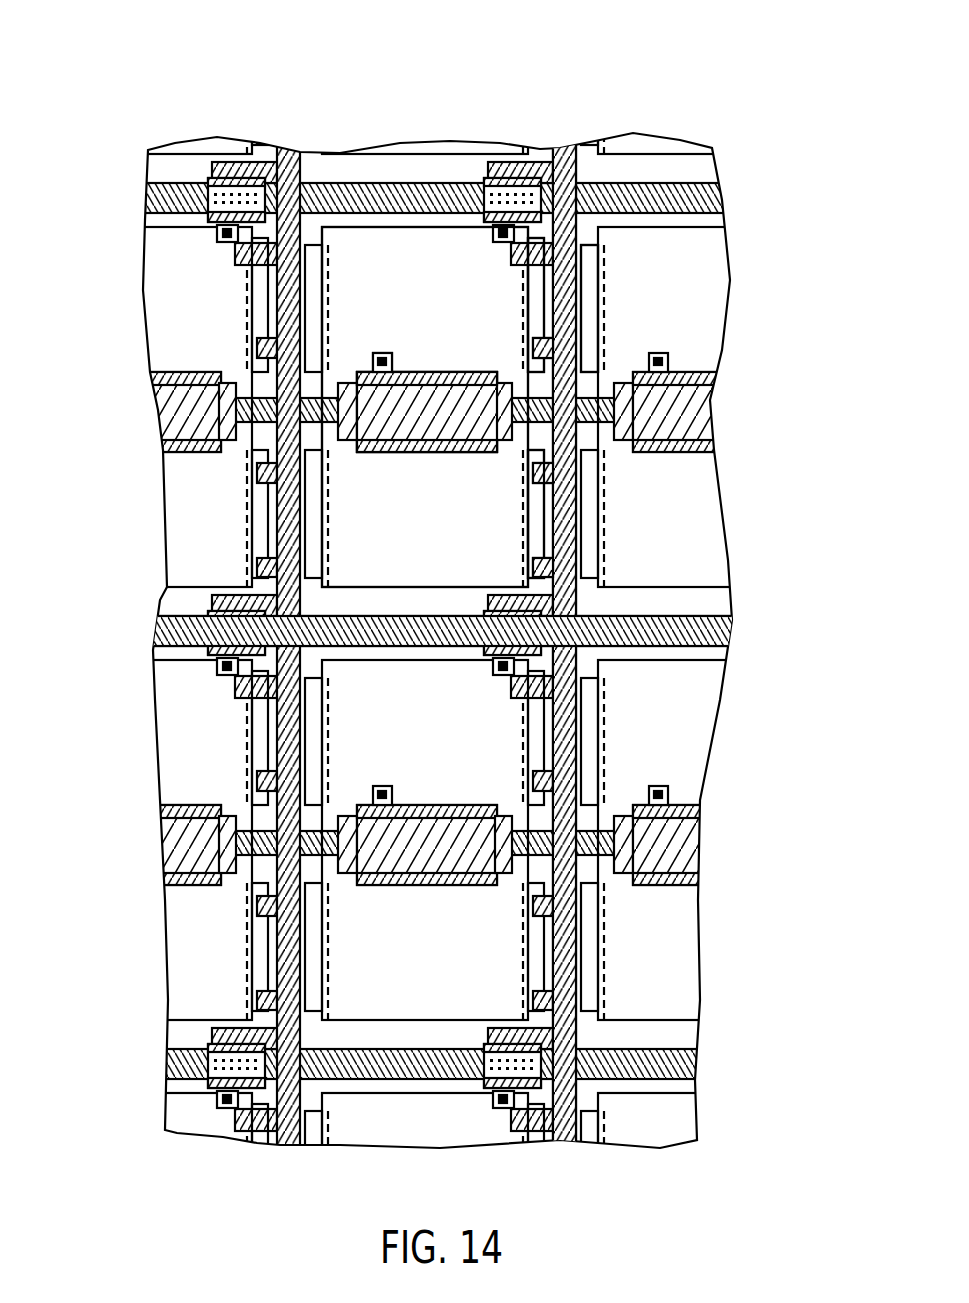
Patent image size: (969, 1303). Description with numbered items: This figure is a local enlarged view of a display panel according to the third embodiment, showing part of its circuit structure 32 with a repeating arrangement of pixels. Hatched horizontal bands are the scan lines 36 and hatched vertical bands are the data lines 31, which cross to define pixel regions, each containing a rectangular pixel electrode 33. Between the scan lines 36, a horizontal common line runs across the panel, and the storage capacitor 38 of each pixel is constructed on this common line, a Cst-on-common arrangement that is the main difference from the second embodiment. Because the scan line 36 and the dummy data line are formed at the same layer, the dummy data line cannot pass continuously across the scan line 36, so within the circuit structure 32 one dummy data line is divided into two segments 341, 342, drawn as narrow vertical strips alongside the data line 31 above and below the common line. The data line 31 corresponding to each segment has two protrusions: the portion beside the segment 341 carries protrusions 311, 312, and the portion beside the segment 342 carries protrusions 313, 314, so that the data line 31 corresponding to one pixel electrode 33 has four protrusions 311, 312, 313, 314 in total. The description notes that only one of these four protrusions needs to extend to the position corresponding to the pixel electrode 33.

The data line 31 is at (555, 155).
The circuit structure 32 is at (409, 102).
The pixel electrode 33 is at (407, 240).
The scan line 36 is at (205, 622).
The storage capacitor 38 is at (394, 335).
The protrusion 311 is at (597, 252).
The protrusion 312 is at (535, 348).
The protrusion 313 is at (535, 473).
The protrusion 314 is at (535, 570).
The segment 341 is at (535, 300).
The segment 342 is at (535, 515).